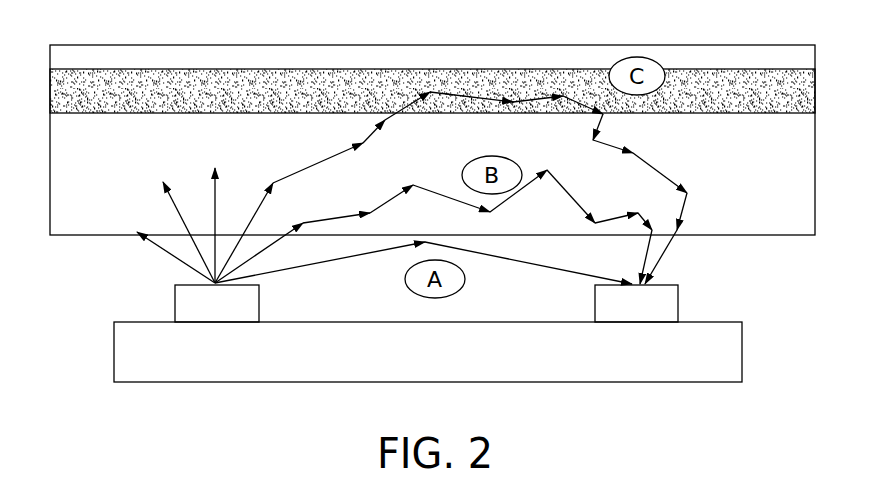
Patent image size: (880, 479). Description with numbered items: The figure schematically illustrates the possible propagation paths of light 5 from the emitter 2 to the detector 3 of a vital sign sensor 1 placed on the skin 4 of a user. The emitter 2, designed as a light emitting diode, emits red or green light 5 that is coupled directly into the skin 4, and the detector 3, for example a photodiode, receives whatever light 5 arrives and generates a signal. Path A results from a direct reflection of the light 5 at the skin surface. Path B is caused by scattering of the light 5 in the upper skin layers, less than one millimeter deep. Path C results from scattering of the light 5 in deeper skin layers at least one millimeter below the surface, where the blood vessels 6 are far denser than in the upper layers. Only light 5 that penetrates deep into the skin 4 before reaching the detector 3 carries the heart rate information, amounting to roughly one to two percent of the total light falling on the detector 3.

The vital sign sensor 1 is at (90, 365).
The emitter 2 is at (175, 307).
The detector 3 is at (678, 305).
The skin 4 is at (65, 163).
The light 5 is at (220, 213).
The blood vessels 6 is at (55, 90).